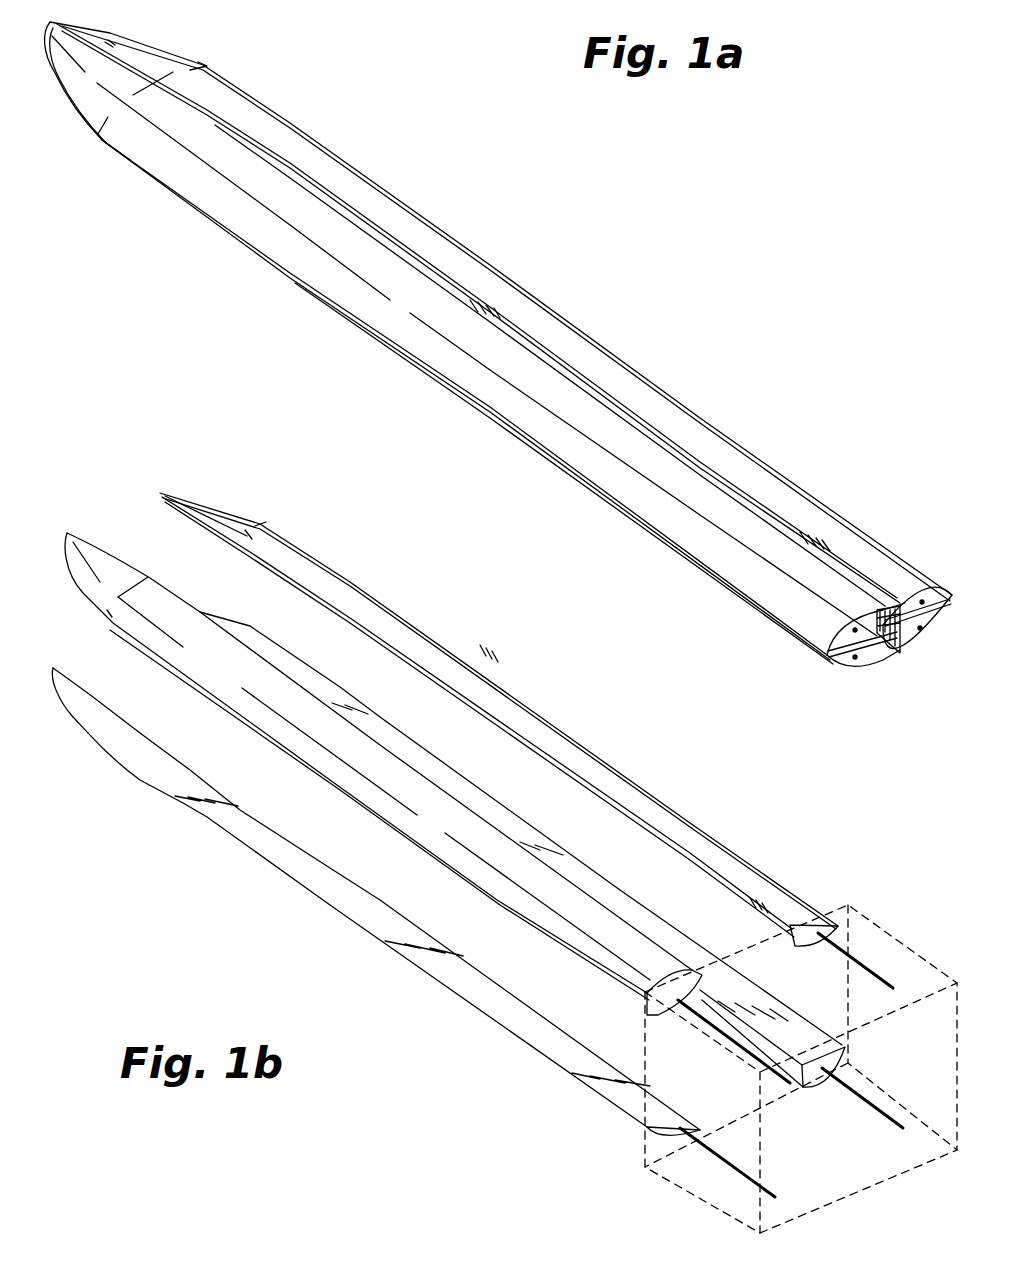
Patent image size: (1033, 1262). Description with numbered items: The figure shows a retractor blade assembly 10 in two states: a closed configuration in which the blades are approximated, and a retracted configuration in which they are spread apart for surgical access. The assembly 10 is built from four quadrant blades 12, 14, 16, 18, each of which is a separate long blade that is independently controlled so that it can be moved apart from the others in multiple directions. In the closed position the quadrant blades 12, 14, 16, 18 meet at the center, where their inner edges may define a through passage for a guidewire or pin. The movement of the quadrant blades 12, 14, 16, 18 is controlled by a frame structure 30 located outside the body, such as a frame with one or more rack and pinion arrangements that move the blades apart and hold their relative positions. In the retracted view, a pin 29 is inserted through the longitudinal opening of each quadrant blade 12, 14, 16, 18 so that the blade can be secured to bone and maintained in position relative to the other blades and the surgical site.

In FIG. 1A, the retractor blade assembly 10 is at (578, 226).
In FIG. 1B, the retractor blade assembly 10 is at (235, 872).
In FIG. 1A, the quadrant blade 12 is at (911, 580).
In FIG. 1B, the quadrant blade 12 is at (775, 883).
In FIG. 1A, the quadrant blade 14 is at (937, 632).
In FIG. 1B, the quadrant blade 14 is at (798, 1012).
In FIG. 1A, the quadrant blade 16 is at (833, 665).
In FIG. 1B, the quadrant blade 16 is at (617, 1107).
In FIG. 1A, the quadrant blade 18 is at (785, 623).
In FIG. 1B, the quadrant blade 18 is at (610, 967).
In FIG. 1B, the pin 29 is at (875, 970).
In FIG. 1B, the frame structure 30 is at (687, 1182).